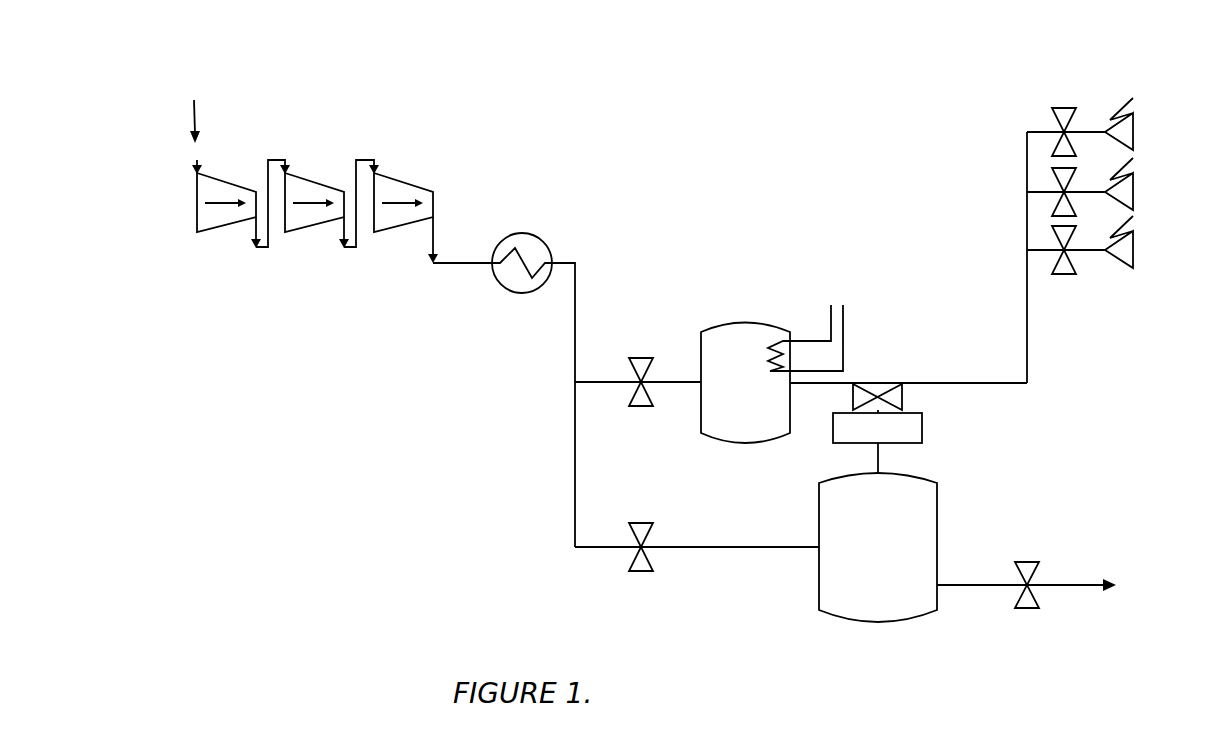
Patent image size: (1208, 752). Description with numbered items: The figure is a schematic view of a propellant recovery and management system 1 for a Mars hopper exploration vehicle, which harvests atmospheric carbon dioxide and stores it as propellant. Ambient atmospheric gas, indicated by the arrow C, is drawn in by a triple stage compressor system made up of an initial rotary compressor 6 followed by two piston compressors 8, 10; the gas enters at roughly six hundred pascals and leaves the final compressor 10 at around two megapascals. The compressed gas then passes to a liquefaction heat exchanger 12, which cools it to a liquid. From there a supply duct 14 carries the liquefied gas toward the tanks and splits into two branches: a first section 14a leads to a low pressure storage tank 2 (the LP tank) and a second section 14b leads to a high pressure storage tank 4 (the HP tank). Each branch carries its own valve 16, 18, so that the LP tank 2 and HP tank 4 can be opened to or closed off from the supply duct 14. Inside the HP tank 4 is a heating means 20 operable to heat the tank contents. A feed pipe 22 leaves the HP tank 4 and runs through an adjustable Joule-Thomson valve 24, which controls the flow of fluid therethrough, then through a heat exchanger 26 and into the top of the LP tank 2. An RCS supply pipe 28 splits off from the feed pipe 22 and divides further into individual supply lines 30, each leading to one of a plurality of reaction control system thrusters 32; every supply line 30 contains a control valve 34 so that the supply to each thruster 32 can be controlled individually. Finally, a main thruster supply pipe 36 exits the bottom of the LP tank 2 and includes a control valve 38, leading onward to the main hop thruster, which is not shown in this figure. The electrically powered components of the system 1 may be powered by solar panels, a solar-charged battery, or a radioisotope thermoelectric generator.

The propellant recovery and management system 1 is at (780, 96).
The low pressure CO2 storage tank 2 is at (853, 624).
The high pressure CO2 storage tank 4 is at (761, 326).
The initial rotary compressor 6 is at (219, 234).
The piston compressor 8 is at (306, 234).
The piston compressor 10 is at (392, 234).
The liquefaction heat exchanger 12 is at (531, 234).
The supply duct 14 is at (566, 345).
The first section of supply duct 14a is at (588, 549).
The second section of supply duct 14b is at (588, 384).
The valve 16 is at (641, 522).
The valve 18 is at (641, 358).
The heating means 20 is at (845, 347).
The feed pipe 22 is at (805, 386).
The Joule-Thomson valve 24 is at (905, 397).
The heat exchanger 26 is at (925, 432).
The RCS supply pipe 28 is at (1030, 320).
The supply line 30 is at (1030, 131).
The thruster 32 is at (1135, 132).
The control valve 34 is at (1075, 104).
The main thruster supply pipe 36 is at (970, 588).
The control valve 38 is at (1030, 560).